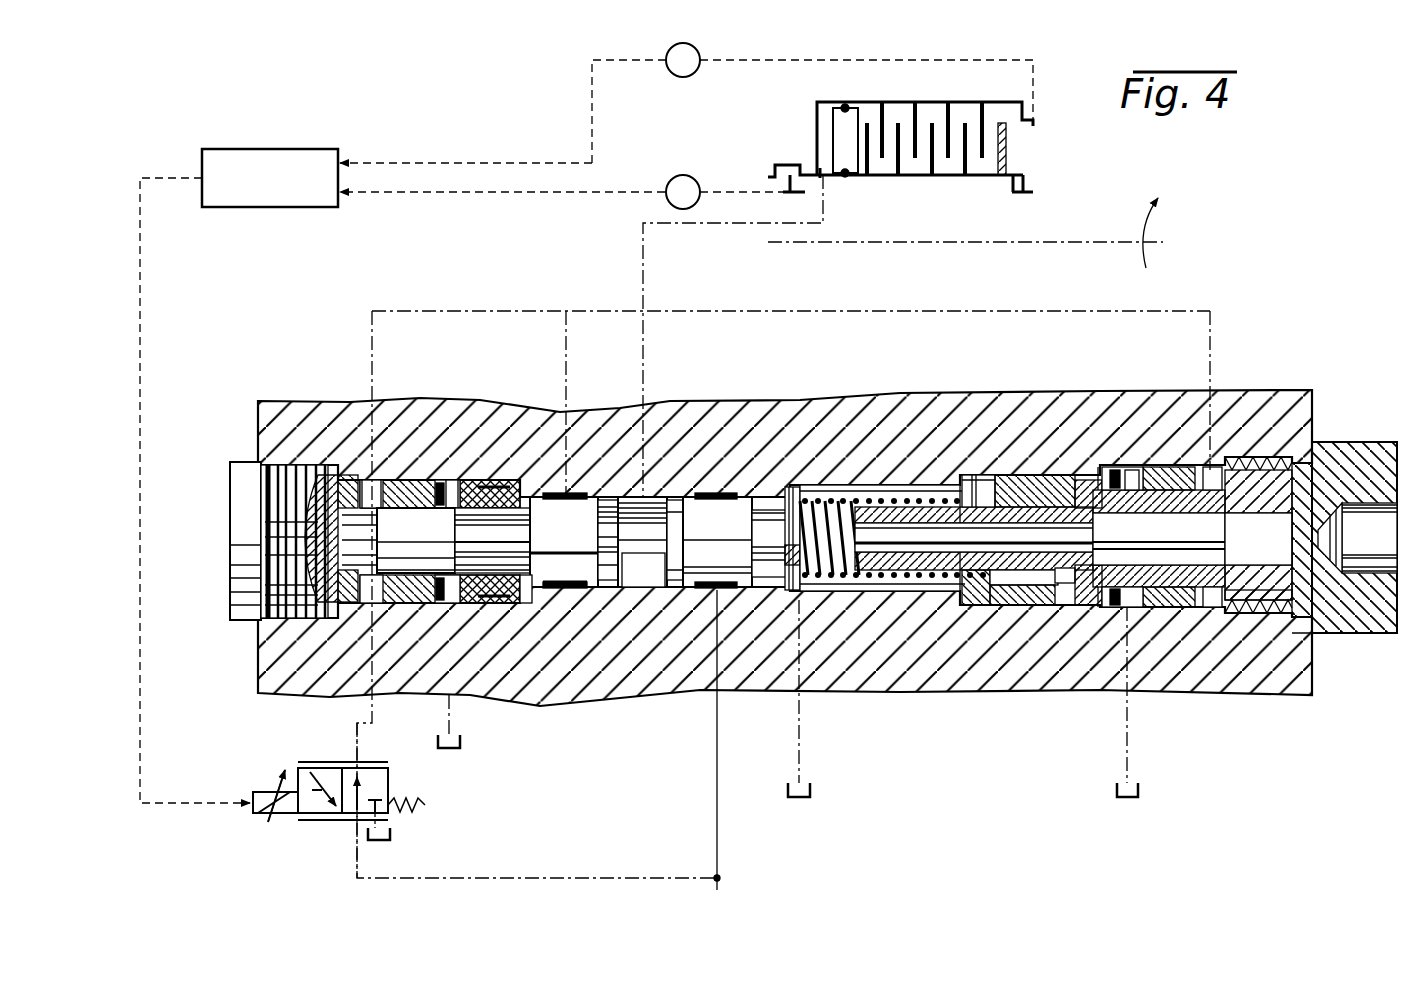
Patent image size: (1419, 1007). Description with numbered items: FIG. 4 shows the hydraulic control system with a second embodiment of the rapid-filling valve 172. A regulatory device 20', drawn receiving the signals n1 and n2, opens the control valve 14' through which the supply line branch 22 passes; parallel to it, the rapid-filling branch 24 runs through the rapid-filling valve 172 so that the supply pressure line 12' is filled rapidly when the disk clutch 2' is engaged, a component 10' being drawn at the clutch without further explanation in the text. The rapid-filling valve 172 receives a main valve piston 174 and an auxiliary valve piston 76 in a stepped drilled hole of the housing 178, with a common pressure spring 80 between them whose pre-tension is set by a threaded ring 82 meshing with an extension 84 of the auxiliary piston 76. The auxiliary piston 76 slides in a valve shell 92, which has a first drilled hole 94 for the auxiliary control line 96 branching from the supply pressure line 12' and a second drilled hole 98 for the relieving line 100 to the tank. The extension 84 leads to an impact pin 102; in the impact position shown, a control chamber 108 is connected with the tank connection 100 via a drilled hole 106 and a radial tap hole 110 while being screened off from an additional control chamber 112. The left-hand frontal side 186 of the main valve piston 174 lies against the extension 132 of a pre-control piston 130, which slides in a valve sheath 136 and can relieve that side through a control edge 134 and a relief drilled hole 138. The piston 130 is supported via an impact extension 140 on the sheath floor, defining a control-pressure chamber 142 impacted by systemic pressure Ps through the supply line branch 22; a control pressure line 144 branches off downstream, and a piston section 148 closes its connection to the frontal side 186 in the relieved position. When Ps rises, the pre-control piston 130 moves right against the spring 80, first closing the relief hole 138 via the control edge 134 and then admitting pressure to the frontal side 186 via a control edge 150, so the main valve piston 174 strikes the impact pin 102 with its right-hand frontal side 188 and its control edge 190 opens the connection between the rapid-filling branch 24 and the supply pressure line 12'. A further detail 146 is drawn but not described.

The disk clutch 2' is at (931, 147).
The speed sensor 10' is at (803, 140).
The supply pressure line 12' is at (733, 336).
The control valve 14' is at (339, 821).
The regulatory device 20' is at (586, 423).
The supply line branch 22 is at (360, 735).
The rapid-filling branch 24 is at (746, 743).
The auxiliary valve piston 76 is at (1172, 590).
The pressure spring 80 is at (870, 590).
The threaded ring 82 is at (1033, 590).
The extension 84 is at (952, 600).
The valve shell 92 is at (1262, 535).
The first drilled hole 94 is at (1240, 590).
The auxiliary control line 96 is at (932, 308).
The second drilled hole 98 is at (1142, 590).
The relieving line 100 is at (1127, 752).
The impact pin 102 is at (1315, 470).
The drilled hole 106 is at (1253, 598).
The control chamber 108 is at (1316, 625).
The radial tap hole 110 is at (1127, 470).
The additional control chamber 112 is at (1240, 440).
The pre-control piston 130 is at (403, 530).
The extension 132 is at (507, 560).
The control edge 134 is at (535, 495).
The valve sheath 136 is at (340, 600).
The relief drilled hole 138 is at (450, 490).
The impact extension 140 is at (270, 612).
The control-pressure chamber 142 is at (335, 520).
The control pressure line 144 is at (566, 331).
The control land 146 is at (567, 493).
The piston section 148 is at (567, 553).
The control edge 150 is at (537, 497).
The rapid-filling valve 172 is at (1214, 381).
The main valve piston 174 is at (630, 540).
The housing 178 is at (873, 400).
The left-hand frontal side 186 is at (527, 577).
The spring plate 188 is at (800, 590).
The control edge 190 is at (668, 580).
The speed signal n1 is at (683, 192).
The speed signal n2 is at (683, 60).
The systemic pressure Ps is at (731, 885).